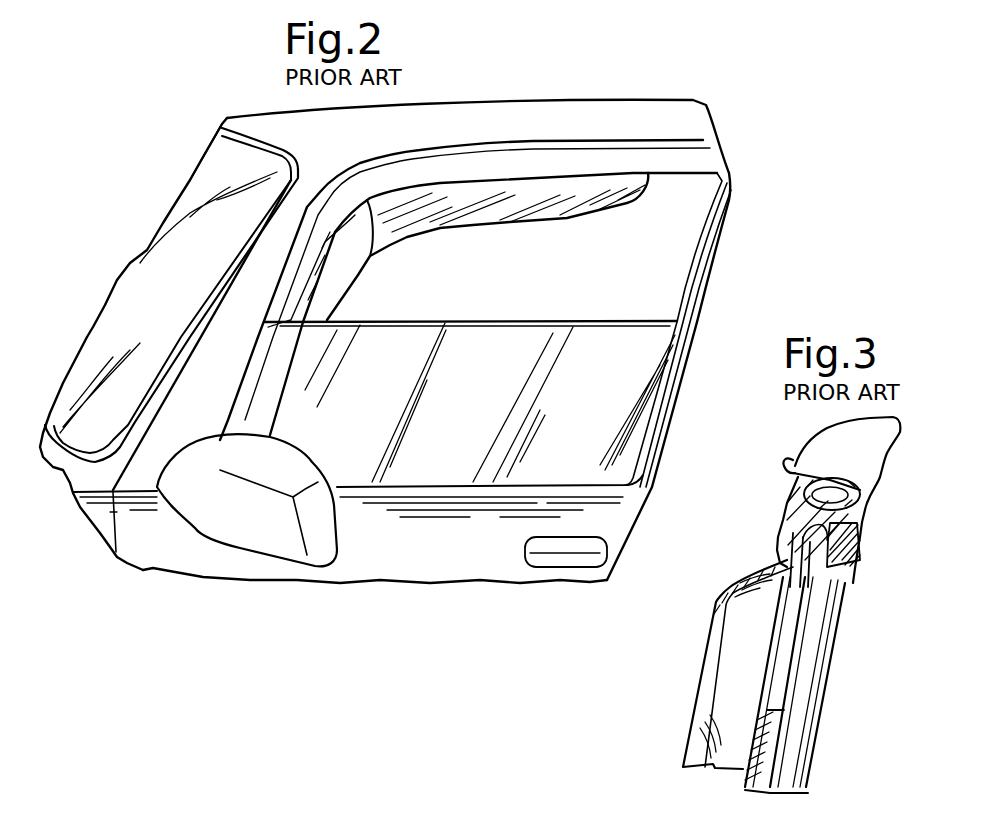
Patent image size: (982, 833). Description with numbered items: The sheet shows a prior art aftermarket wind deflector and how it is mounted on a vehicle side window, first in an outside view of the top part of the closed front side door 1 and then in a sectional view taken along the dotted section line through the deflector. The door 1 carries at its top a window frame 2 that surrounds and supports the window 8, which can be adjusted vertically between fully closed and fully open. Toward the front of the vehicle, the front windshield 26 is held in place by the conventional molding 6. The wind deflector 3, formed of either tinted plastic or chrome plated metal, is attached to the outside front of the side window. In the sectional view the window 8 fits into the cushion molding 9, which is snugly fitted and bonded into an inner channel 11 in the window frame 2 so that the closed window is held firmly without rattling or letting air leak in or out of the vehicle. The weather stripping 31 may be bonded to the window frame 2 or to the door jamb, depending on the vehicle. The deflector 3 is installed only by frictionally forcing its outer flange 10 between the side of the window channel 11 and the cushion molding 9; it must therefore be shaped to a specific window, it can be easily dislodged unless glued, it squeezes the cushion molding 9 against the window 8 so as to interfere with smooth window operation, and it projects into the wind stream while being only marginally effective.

In FIG. 2, the front side door 1 is at (147, 568).
In FIG. 2, the window frame 2 is at (363, 173).
In FIG. 3, the window frame 2 is at (785, 508).
In FIG. 2, the wind deflector 3 is at (613, 165).
In FIG. 3, the wind deflector 3 is at (722, 592).
In FIG. 2, the molding 6 is at (204, 308).
In FIG. 2, the window 8 is at (478, 329).
In FIG. 3, the window 8 is at (775, 712).
In FIG. 3, the cushion molding 9 is at (820, 570).
In FIG. 3, the flange 10 is at (797, 543).
In FIG. 3, the inner channel 11 is at (861, 525).
In FIG. 2, the front windshield 26 is at (213, 172).
In FIG. 3, the weather stripping 31 is at (863, 505).